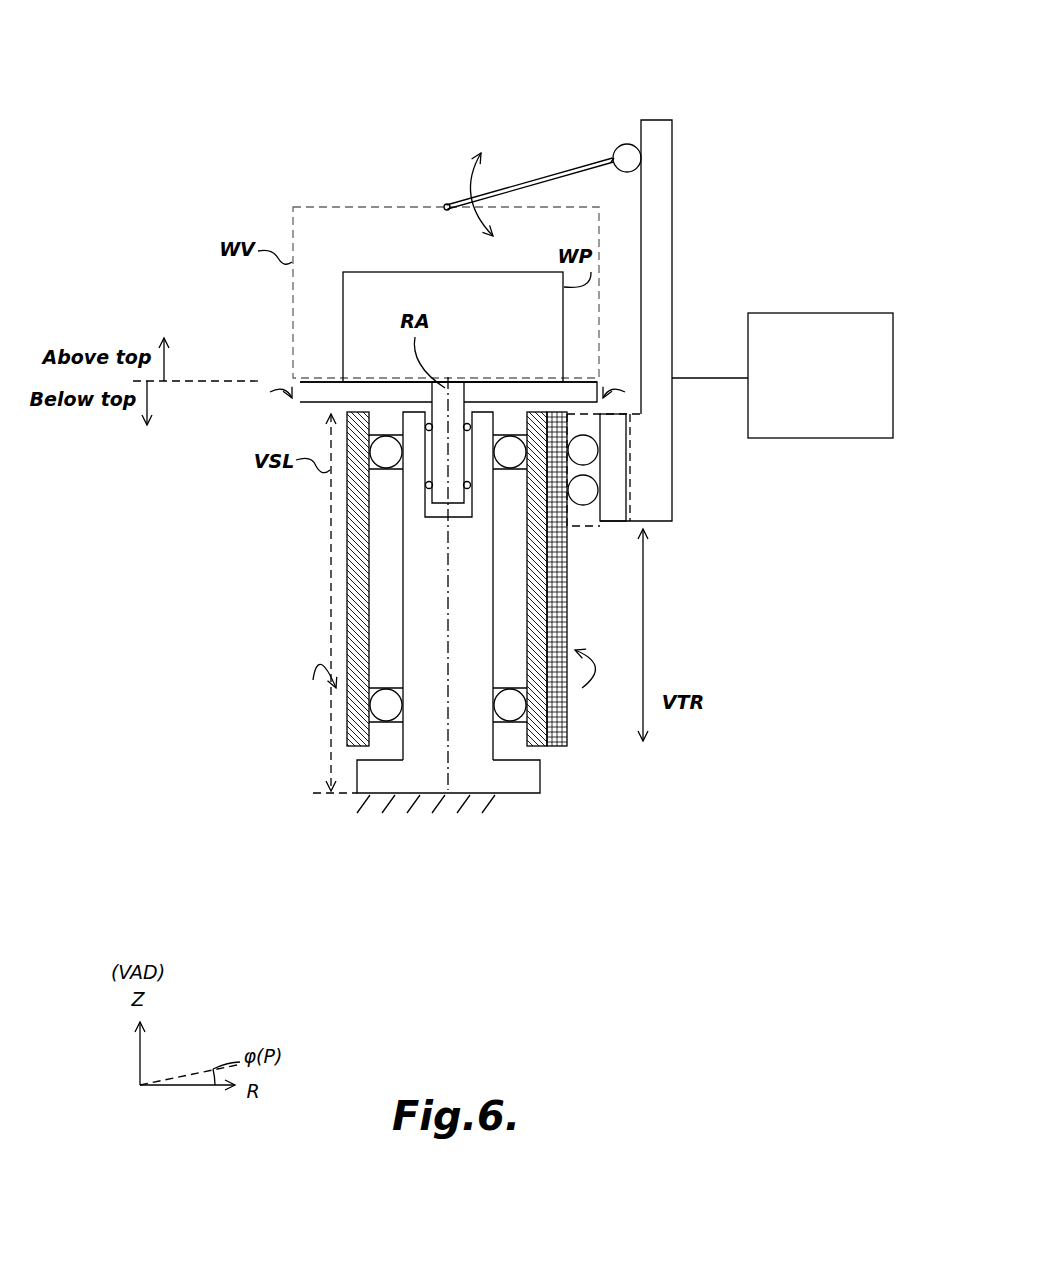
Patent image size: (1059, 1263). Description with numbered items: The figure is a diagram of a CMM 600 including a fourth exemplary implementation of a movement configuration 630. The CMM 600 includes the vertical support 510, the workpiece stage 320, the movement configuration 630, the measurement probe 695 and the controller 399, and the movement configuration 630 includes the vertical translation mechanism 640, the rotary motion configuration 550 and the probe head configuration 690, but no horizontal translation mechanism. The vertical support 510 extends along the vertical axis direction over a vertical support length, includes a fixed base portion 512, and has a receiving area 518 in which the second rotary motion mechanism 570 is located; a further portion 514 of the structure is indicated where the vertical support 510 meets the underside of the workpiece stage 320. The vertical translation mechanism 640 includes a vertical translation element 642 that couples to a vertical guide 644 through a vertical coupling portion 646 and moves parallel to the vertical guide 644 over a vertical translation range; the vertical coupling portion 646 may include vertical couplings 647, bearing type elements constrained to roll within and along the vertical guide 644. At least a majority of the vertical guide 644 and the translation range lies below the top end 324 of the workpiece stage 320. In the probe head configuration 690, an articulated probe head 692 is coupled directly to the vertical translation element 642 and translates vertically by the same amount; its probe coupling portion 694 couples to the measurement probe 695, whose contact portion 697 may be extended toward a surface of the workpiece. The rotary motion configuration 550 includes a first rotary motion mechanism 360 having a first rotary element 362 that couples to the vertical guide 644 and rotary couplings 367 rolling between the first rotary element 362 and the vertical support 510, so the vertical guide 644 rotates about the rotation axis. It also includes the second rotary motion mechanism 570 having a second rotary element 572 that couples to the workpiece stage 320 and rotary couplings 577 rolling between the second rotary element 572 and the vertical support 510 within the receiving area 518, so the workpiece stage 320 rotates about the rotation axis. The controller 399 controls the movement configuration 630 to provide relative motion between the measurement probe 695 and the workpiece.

The CMM 600 is at (701, 44).
The probe head configuration 690 is at (490, 167).
The articulated probe head 692 is at (626, 143).
The probe coupling portion 694 is at (611, 160).
The measurement probe 695 is at (527, 183).
The contact portion 697 is at (445, 211).
The controller 399 is at (832, 313).
The movement configuration 630 is at (705, 794).
The vertical translation mechanism 640 is at (685, 579).
The vertical translation element 642 is at (658, 414).
The vertical guide 644 is at (583, 506).
The vertical coupling portion 646 is at (630, 490).
The vertical couplings 647 is at (565, 540).
The workpiece stage 320 is at (311, 404).
The top end 324 is at (336, 380).
The rotating shaft 514 is at (487, 388).
The receiving area 518 is at (432, 388).
The rotary motion configuration 550 is at (371, 617).
The vertical support 510 is at (433, 583).
The fixed base portion 512 is at (510, 795).
The second rotary motion mechanism 570 is at (333, 482).
The second rotary element 572 is at (442, 462).
The rotary couplings 577 is at (428, 485).
The first rotary motion mechanism 360 is at (362, 610).
The first rotary element 362 is at (368, 722).
The rotary couplings 367 is at (402, 722).